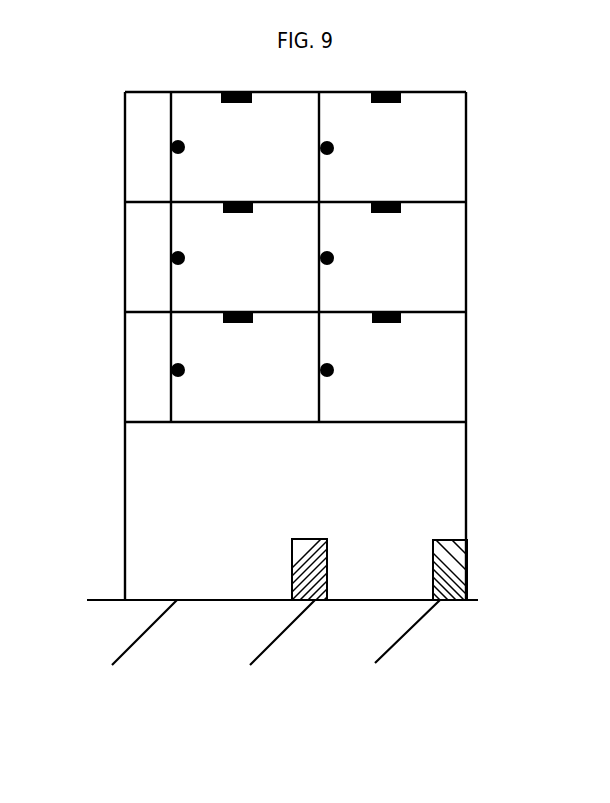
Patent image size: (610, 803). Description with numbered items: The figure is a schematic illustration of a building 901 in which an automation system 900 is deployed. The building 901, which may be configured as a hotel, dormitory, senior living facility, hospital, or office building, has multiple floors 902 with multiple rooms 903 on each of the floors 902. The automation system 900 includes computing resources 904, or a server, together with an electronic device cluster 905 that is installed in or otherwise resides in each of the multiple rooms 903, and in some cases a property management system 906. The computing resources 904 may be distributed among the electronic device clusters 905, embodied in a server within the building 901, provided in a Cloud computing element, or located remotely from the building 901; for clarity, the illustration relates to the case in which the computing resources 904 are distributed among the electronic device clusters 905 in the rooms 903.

The automation system 900 is at (318, 485).
The building 901 is at (355, 82).
The floors 902 is at (355, 262).
The rooms 903 is at (252, 175).
The computing resources 904 is at (447, 540).
The electronic device cluster 905 is at (174, 143).
The property management system 906 is at (261, 565).